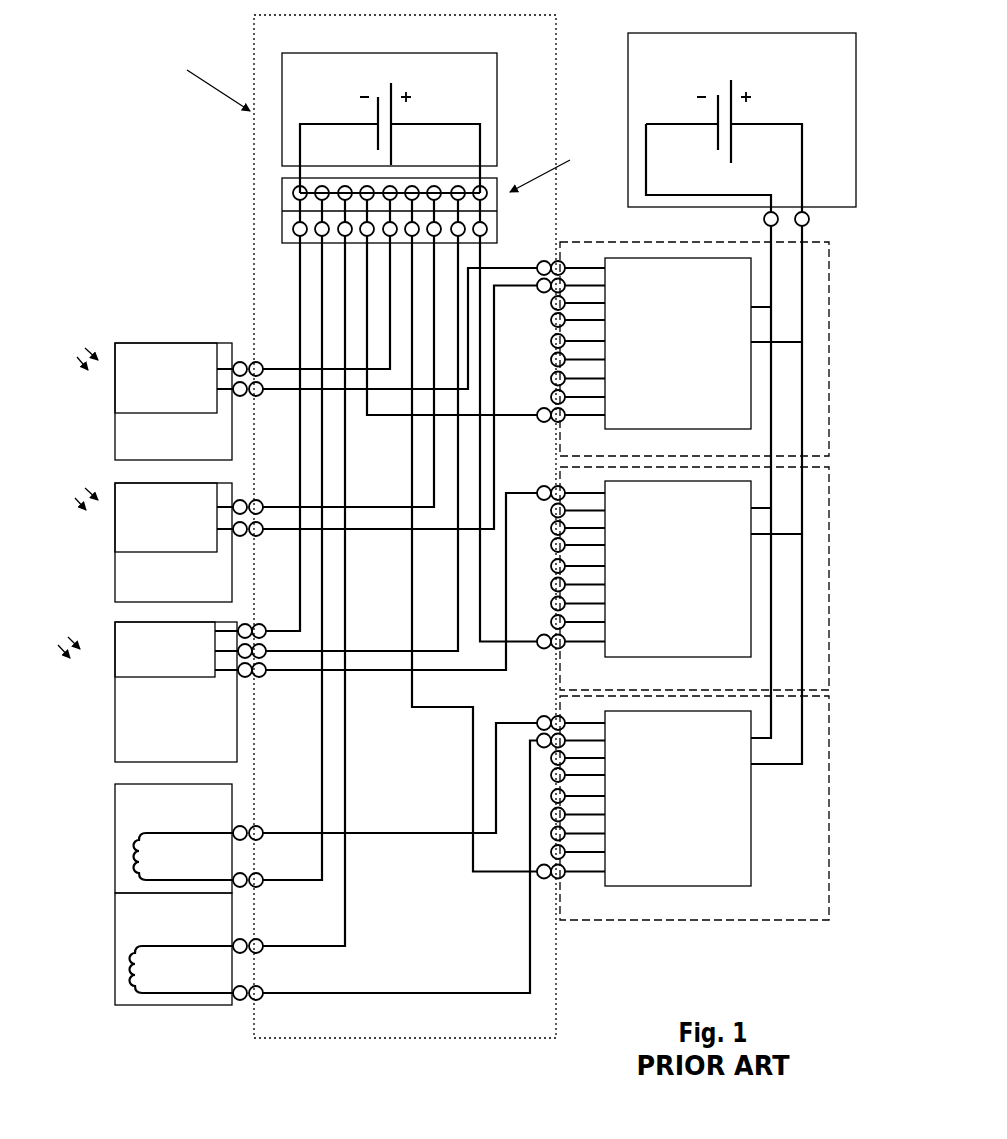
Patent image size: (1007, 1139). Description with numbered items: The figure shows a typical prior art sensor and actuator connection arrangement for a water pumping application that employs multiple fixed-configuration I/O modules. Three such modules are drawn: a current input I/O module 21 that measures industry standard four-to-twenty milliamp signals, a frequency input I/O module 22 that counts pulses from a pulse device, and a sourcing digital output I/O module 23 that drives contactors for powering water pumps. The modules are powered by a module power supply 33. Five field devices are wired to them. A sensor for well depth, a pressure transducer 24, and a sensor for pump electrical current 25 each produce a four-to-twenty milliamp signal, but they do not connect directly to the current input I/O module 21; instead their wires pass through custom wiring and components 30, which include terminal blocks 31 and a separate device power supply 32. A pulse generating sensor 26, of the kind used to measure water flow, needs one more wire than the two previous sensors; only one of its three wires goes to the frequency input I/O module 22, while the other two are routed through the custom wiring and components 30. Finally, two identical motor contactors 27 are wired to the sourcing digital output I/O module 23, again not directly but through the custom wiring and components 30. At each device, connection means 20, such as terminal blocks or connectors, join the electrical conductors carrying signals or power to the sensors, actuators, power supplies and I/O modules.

The connection means 20 is at (247, 362).
The current input I/O module 21 is at (731, 288).
The frequency input I/O module 22 is at (732, 515).
The sourcing digital output I/O module 23 is at (733, 747).
The pressure transducer 24 is at (115, 417).
The pump electrical current sensor 25 is at (115, 563).
The pulse generating sensor 26 is at (112, 722).
The motor contactors 27 is at (115, 843).
The custom wiring and components 30 is at (255, 152).
The terminal blocks 31 is at (495, 227).
The device power supply 32 is at (483, 76).
The module power supply 33 is at (735, 43).